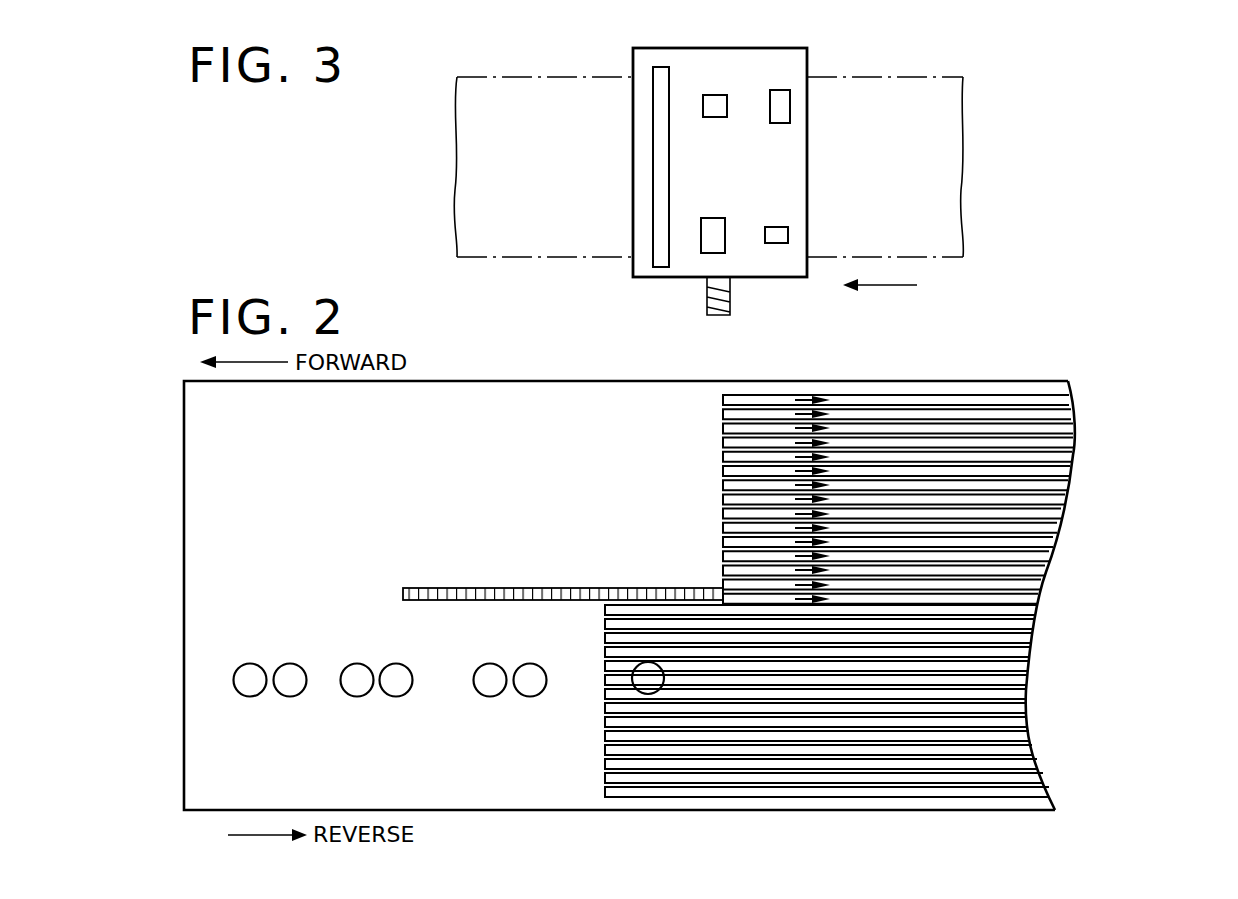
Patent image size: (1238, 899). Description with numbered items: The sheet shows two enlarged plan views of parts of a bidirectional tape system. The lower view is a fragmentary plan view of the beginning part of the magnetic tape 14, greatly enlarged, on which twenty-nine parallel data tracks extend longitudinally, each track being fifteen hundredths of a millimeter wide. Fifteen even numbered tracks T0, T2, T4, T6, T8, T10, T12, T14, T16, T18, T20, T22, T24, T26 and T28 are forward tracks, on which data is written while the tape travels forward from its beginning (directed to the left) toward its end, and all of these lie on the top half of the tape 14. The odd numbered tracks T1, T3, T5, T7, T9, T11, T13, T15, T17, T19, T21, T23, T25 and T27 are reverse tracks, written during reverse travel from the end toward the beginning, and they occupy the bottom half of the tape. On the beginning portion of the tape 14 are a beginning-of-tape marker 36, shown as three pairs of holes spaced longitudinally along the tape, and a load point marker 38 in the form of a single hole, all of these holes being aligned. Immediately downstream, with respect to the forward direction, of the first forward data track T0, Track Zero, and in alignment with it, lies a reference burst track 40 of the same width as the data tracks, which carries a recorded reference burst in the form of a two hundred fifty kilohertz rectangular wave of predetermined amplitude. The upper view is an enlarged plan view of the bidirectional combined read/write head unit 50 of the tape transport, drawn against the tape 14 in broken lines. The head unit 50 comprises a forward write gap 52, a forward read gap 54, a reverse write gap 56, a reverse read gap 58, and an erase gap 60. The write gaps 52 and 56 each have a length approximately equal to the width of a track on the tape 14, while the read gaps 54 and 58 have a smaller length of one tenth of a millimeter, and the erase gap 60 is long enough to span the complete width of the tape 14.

In FIG. 3, the tape 14 is at (966, 131).
In FIG. 2, the tape 14 is at (490, 376).
In FIG. 3, the read/write head unit 50 is at (806, 44).
In FIG. 3, the forward write gap 52 is at (785, 100).
In FIG. 3, the forward read gap 54 is at (716, 95).
In FIG. 3, the reverse write gap 56 is at (705, 252).
In FIG. 3, the reverse read gap 58 is at (783, 245).
In FIG. 3, the erase gap 60 is at (659, 67).
In FIG. 2, the beginning-of-tape (BOT) marker 36 is at (260, 695).
In FIG. 2, the load point marker 38 is at (645, 689).
In FIG. 2, the reference burst track 40 is at (486, 588).
In FIG. 2, the forward data track T0 is at (1038, 601).
In FIG. 2, the reverse data track T1 is at (1036, 612).
In FIG. 2, the forward data track T2 is at (1068, 487).
In FIG. 2, the reverse data track T3 is at (1032, 640).
In FIG. 2, the forward data track T4 is at (1008, 402).
In FIG. 2, the reverse data track T5 is at (1036, 756).
In FIG. 2, the forward data track T6 is at (1070, 473).
In FIG. 2, the reverse data track T7 is at (1027, 724).
In FIG. 2, the forward data track T8 is at (1041, 587).
In FIG. 2, the reverse data track T9 is at (918, 792).
In FIG. 2, the forward data track T10 is at (1053, 544).
In FIG. 2, the reverse data track T11 is at (1026, 710).
In FIG. 2, the forward data track T12 is at (1072, 459).
In FIG. 2, the reverse data track T13 is at (1034, 626).
In FIG. 2, the forward data track T14 is at (1040, 416).
In FIG. 2, the reverse data track T15 is at (1028, 668).
In FIG. 2, the forward data track T16 is at (1057, 530).
In FIG. 2, the reverse data track T17 is at (970, 780).
In FIG. 2, the forward data track T18 is at (1049, 558).
In FIG. 2, the reverse data track T19 is at (1026, 696).
In FIG. 2, the forward data track T20 is at (1074, 446).
In FIG. 2, the reverse data track T21 is at (1030, 654).
In FIG. 2, the forward data track T22 is at (1061, 516).
In FIG. 2, the reverse data track T23 is at (1007, 766).
In FIG. 2, the forward data track T24 is at (1045, 572).
In FIG. 2, the reverse data track T25 is at (1027, 682).
In FIG. 2, the forward data track T26 is at (1062, 432).
In FIG. 2, the reverse data track T27 is at (1029, 738).
In FIG. 2, the forward data track T28 is at (1065, 501).